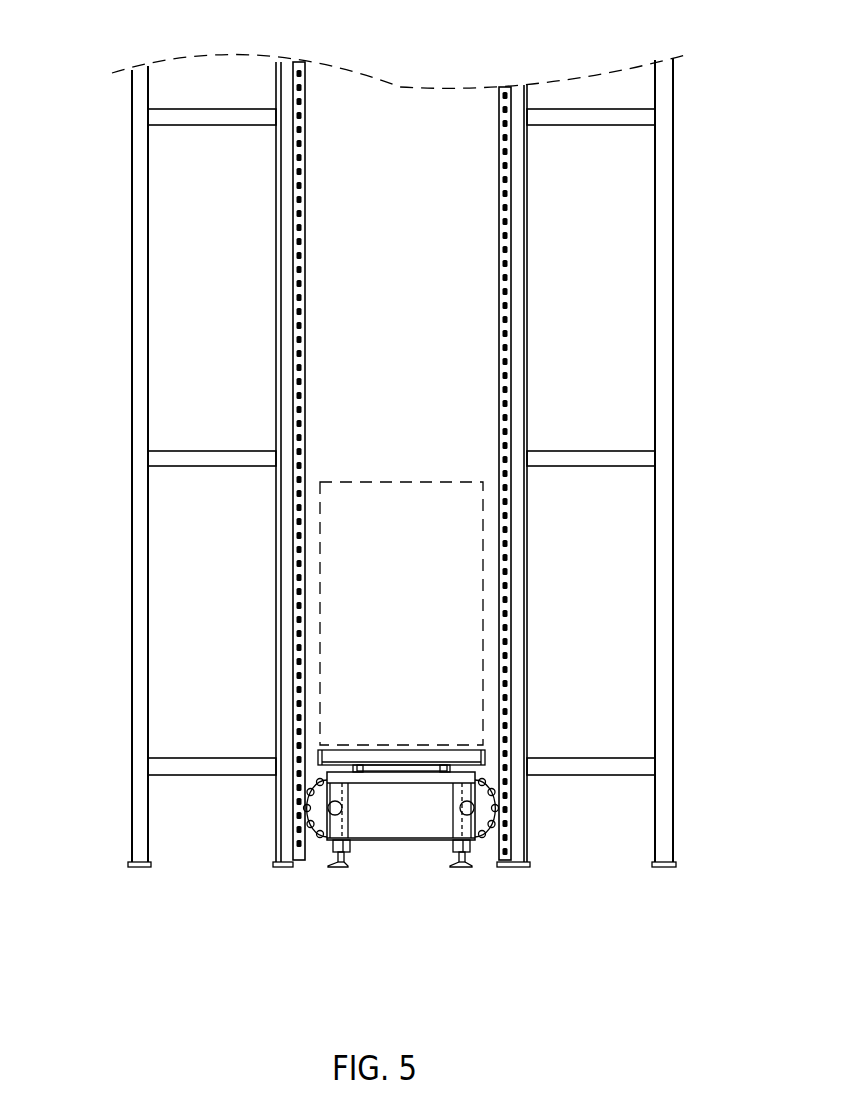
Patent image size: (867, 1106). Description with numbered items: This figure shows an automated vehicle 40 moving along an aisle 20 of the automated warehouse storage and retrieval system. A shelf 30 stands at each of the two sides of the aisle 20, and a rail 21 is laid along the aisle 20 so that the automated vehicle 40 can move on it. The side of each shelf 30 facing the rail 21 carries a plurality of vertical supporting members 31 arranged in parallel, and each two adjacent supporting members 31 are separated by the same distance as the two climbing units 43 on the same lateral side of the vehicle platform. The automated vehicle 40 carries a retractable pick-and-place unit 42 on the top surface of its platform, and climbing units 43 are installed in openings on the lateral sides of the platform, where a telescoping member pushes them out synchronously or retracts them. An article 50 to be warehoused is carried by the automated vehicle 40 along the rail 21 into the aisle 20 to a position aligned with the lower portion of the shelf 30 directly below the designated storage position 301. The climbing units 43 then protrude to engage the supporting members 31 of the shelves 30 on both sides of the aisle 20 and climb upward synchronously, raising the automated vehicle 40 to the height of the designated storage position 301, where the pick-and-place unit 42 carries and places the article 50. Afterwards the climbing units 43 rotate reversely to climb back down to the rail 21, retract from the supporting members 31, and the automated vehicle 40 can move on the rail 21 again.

The aisle 20 is at (405, 88).
The rail 21 is at (470, 866).
The shelf 30 is at (124, 847).
The designated storage position 301 is at (184, 302).
The supporting member 31 is at (298, 655).
The automated vehicle 40 is at (302, 763).
The pick-and-place unit 42 is at (483, 756).
The climbing unit 43 is at (310, 817).
The article 50 is at (387, 474).